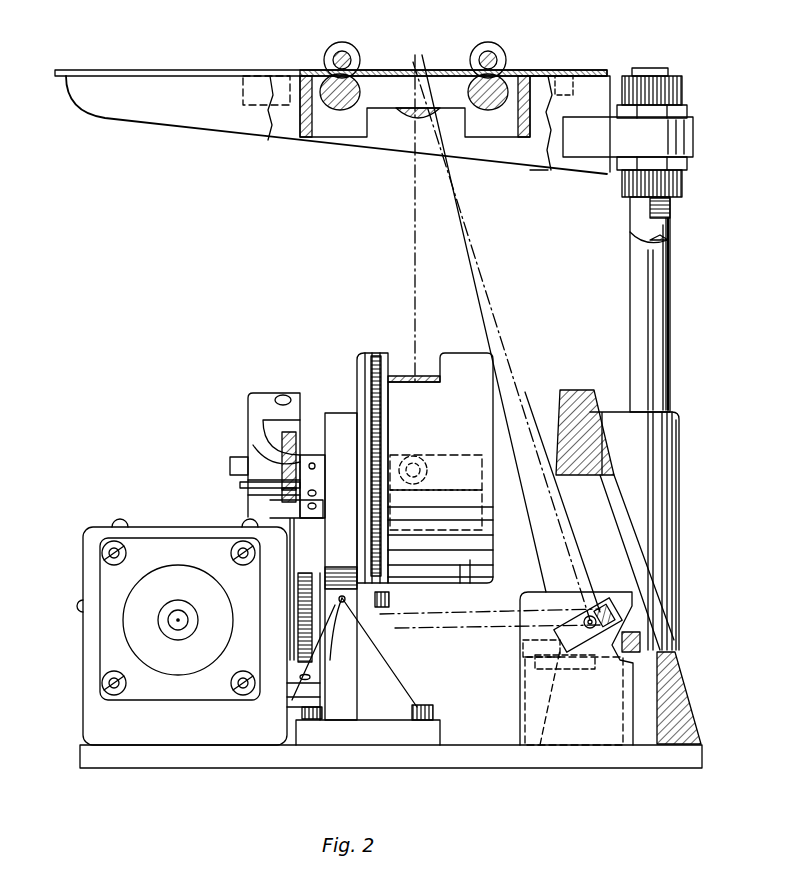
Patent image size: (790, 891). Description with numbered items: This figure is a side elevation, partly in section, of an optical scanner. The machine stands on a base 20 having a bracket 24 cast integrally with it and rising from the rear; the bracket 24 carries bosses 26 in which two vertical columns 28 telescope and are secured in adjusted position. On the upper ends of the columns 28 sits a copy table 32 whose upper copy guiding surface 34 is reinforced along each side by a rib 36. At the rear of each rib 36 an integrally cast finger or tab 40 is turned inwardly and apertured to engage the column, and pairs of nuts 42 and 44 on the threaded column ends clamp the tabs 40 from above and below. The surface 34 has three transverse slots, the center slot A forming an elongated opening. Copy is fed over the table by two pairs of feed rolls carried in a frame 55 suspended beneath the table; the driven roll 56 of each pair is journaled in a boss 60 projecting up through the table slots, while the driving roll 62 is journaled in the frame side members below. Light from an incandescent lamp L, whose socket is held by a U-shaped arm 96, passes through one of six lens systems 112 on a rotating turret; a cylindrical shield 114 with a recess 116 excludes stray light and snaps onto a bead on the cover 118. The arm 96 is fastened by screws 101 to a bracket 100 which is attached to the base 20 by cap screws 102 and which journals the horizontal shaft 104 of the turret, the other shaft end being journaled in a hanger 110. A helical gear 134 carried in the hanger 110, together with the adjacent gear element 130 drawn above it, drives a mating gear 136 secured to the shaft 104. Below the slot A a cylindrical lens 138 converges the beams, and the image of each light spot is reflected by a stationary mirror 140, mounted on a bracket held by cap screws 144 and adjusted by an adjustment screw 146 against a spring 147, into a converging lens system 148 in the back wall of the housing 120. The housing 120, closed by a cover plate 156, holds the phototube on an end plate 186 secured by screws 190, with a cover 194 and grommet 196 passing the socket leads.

The base 20 is at (300, 768).
The bracket 24 is at (672, 690).
The bosses 26 is at (680, 460).
The columns 28 is at (658, 228).
The copy table 32 is at (250, 120).
The upper copy guiding surface 34 is at (170, 72).
The rib 36 is at (108, 100).
The finger or tab 40 is at (598, 158).
The nuts 42 is at (687, 110).
The nuts 44 is at (684, 186).
The frame 55 is at (318, 118).
The driven roll 56 is at (327, 62).
The boss 60 is at (342, 42).
The driving roll 62 is at (360, 92).
The cylindrical lens 138 is at (425, 115).
The center slot A is at (506, 329).
The incandescent lamp L is at (416, 462).
The U-shaped arm 96 is at (480, 553).
The bracket 100 is at (372, 655).
The screws 101 is at (389, 600).
The cap screws 102 is at (433, 710).
The horizontal shaft 104 is at (232, 460).
The hanger 110 is at (242, 480).
The lens systems 112 is at (420, 380).
The cylindrical shield 114 is at (497, 385).
The recess 116 is at (388, 352).
The cover 118 is at (358, 356).
The housing 120 is at (92, 565).
The bracket 130 is at (275, 393).
The helical gear 134 is at (297, 435).
The mating gear 136 is at (282, 490).
The stationary mirror 140 is at (576, 668).
The cap screws 144 is at (560, 630).
The adjustment screw 146 is at (640, 642).
The spring 147 is at (568, 682).
The converging lens system 148 is at (290, 665).
The cover plate 156 is at (83, 660).
The end plate 186 is at (105, 630).
The screws 190 is at (230, 553).
The cover 194 is at (132, 592).
The grommet 196 is at (196, 590).